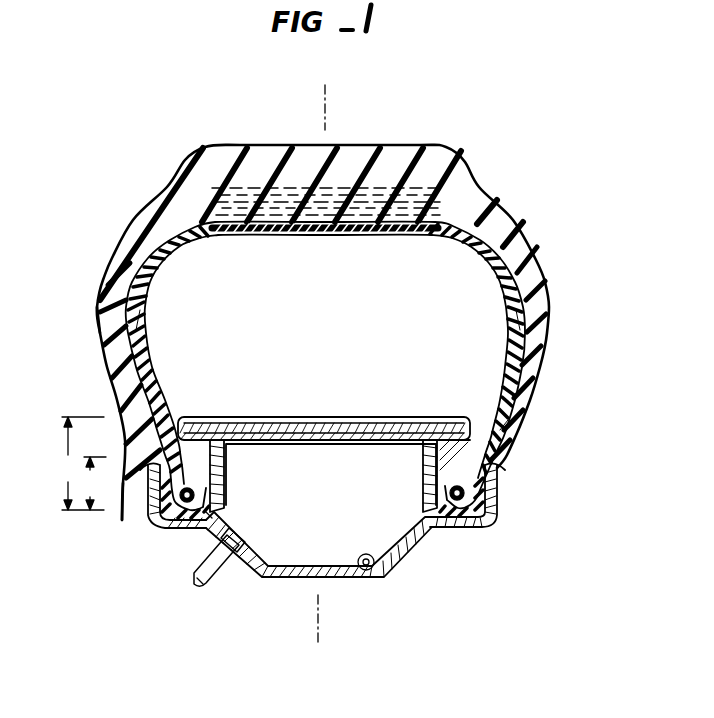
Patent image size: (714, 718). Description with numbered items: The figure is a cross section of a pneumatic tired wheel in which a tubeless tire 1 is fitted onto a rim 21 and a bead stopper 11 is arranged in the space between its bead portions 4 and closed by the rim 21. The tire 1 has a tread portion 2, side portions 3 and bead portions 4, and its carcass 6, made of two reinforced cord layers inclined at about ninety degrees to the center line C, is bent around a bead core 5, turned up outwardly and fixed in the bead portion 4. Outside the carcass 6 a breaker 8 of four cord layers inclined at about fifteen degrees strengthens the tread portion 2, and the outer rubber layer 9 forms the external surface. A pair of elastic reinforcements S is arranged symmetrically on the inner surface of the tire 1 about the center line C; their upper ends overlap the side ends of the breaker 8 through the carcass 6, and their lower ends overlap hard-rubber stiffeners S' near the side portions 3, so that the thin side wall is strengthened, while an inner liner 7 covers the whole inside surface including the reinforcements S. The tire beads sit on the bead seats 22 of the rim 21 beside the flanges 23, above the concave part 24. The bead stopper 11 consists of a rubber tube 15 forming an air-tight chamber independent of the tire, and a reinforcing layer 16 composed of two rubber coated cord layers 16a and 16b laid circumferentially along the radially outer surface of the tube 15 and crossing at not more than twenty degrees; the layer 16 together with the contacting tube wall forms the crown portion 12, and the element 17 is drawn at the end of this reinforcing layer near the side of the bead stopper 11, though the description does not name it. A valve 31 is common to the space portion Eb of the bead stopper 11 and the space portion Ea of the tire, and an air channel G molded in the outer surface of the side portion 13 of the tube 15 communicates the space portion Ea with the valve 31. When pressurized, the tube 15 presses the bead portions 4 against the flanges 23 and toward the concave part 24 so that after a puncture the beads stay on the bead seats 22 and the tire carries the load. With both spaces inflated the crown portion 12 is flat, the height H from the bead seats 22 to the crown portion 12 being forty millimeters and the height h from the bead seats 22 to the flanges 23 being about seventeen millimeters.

The tubeless tire 1 is at (490, 192).
The tread portion 2 is at (373, 146).
The side portions 3 is at (97, 285).
The bead portions 4 is at (118, 520).
The bead core 5 is at (186, 502).
The carcass 6 is at (98, 347).
The inner liner 7 is at (144, 332).
The breaker 8 is at (246, 214).
The outer rubber layer 9 is at (153, 220).
The bead stopper 11 is at (328, 523).
The crown portion 12 is at (303, 416).
The side portion 13 is at (421, 478).
The rubber tube 15 is at (353, 578).
The reinforcing layer 16 is at (258, 417).
The rubber coated cord layer 16a is at (287, 417).
The rubber coated cord layer 16b is at (223, 417).
The band end 17 is at (430, 417).
The rim 21 is at (406, 544).
The bead seats 22 is at (470, 525).
The flange 23 is at (488, 491).
The concave part 24 is at (387, 574).
The valve 31 is at (203, 584).
The center line C is at (318, 366).
The elastic reinforcements S is at (362, 291).
The stiffeners S' is at (532, 430).
The space portion of the tire Ea is at (496, 353).
The space portion of the bead stopper Eb is at (380, 444).
The air channel G is at (224, 481).
The height from the bead seats to the crown portion H is at (78, 463).
The height from the bead seats to the flanges h is at (95, 483).